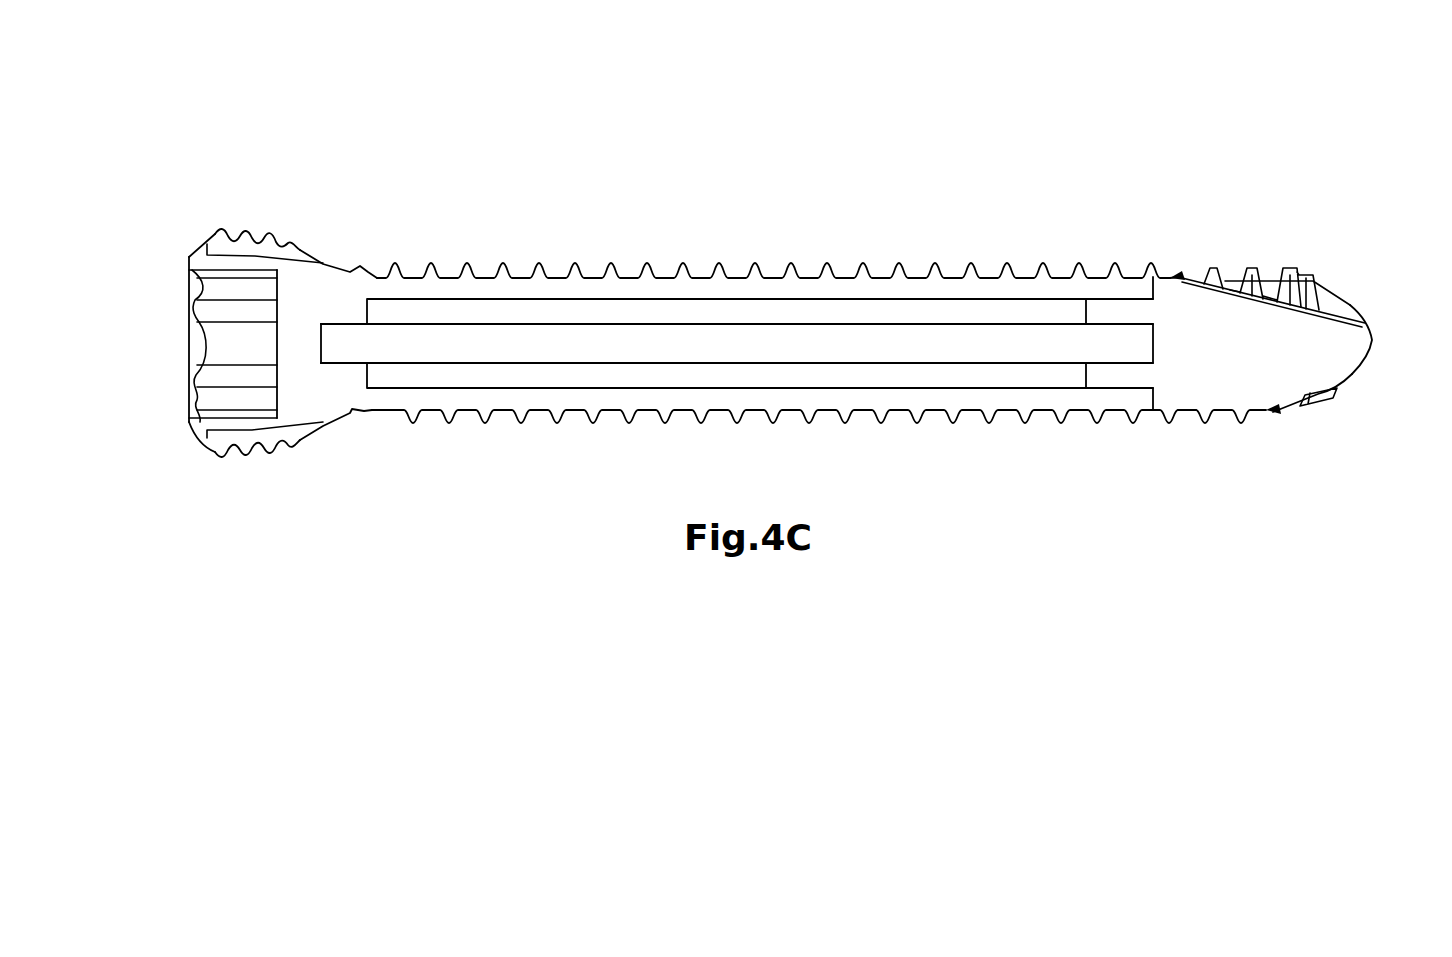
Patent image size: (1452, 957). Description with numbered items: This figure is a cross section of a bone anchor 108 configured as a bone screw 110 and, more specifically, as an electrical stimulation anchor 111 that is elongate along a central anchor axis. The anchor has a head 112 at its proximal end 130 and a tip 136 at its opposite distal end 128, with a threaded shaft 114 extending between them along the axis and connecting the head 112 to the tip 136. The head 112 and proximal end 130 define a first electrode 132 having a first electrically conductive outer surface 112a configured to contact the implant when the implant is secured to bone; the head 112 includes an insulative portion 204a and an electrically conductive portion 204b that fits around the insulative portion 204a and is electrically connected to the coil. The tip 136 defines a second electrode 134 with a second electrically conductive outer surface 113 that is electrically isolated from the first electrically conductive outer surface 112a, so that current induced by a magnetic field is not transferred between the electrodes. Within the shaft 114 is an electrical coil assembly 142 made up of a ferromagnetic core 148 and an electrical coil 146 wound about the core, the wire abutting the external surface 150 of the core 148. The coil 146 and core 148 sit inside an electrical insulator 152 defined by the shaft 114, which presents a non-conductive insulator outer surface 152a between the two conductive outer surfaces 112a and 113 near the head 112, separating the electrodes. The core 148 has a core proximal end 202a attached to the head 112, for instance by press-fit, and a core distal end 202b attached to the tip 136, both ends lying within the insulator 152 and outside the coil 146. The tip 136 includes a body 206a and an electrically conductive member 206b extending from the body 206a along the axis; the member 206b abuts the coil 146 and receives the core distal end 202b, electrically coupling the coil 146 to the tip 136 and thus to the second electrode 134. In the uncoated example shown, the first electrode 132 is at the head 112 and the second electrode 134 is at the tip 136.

The bone anchor 108 is at (628, 160).
The bone screw 110 is at (782, 315).
The electrical stimulation anchor 111 is at (782, 315).
The proximal end 130 is at (190, 256).
The first electrode 132 is at (236, 237).
The first electrically conductive outer surface 112a is at (268, 238).
The head 112 is at (310, 237).
The external surface 150 is at (345, 325).
The electrical coil 146 is at (547, 320).
The electrical insulator 152 is at (660, 290).
The shaft 114 is at (800, 252).
The ferromagnetic core 148 is at (685, 345).
The electrical coil assembly 142 is at (608, 352).
The insulator outer surface 152a is at (390, 413).
The core proximal end 202a is at (348, 345).
The core distal end 202b is at (1125, 345).
The member 206b is at (1125, 308).
The body 206a is at (1250, 357).
The second electrically conductive outer surface 113 is at (1272, 280).
The second electrode 134 is at (1327, 285).
The distal end 128 is at (1375, 337).
The tip 136 is at (1375, 345).
The insulative portion 204a is at (220, 397).
The electrically conductive portion 204b is at (252, 430).